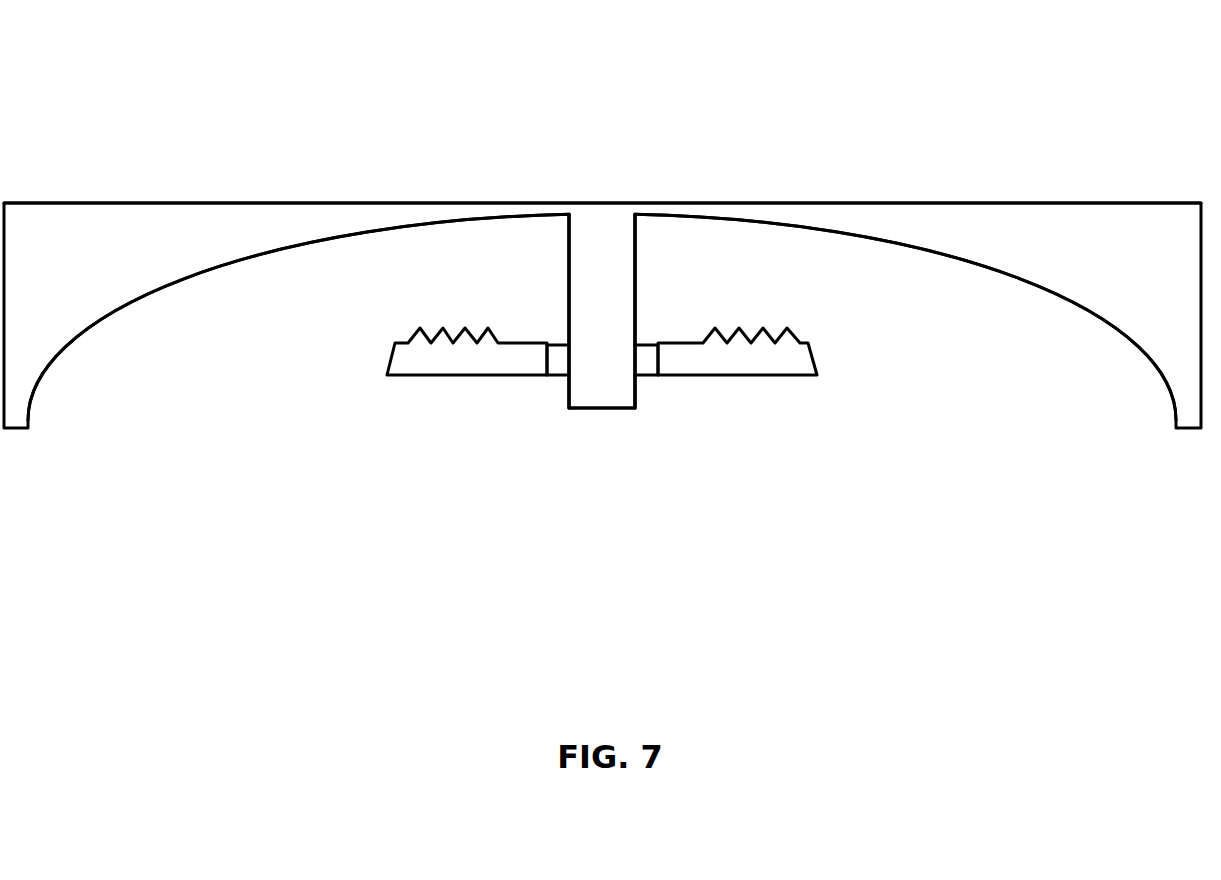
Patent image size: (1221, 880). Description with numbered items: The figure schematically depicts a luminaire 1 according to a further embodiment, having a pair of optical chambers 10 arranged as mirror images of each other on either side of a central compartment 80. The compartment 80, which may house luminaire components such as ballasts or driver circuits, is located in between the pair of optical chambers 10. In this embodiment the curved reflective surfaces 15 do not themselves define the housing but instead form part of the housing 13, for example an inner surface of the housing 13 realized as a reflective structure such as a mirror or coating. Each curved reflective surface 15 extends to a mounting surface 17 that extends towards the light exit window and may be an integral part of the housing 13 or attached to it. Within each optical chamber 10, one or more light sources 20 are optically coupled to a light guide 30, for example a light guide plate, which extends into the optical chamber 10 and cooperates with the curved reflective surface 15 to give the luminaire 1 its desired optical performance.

The luminaire 1 is at (602, 352).
The optical chamber 10 is at (272, 285).
The housing 13 is at (868, 202).
The curved reflective surface 15 is at (392, 225).
The mounting surface 17 is at (569, 285).
The light source 20 is at (560, 367).
The light guide 30 is at (445, 365).
The compartment 80 is at (607, 253).